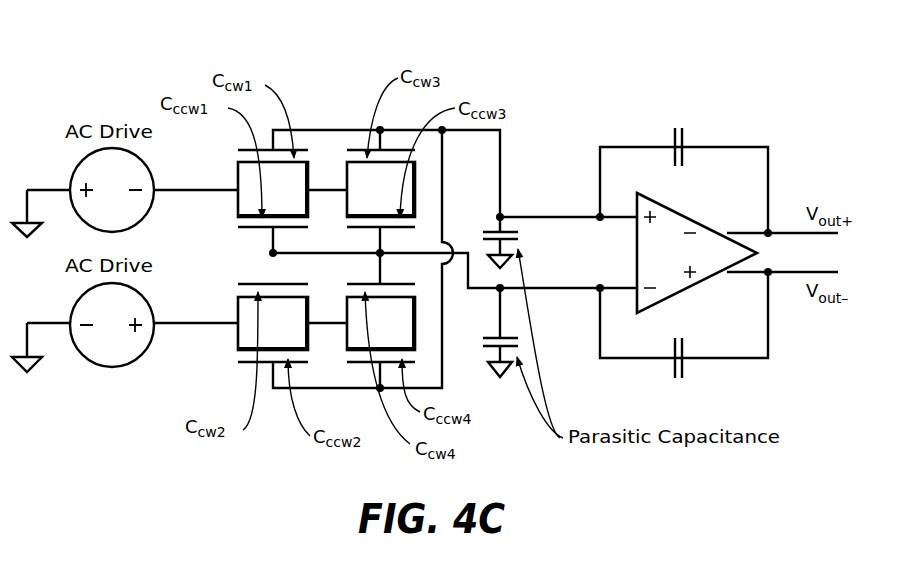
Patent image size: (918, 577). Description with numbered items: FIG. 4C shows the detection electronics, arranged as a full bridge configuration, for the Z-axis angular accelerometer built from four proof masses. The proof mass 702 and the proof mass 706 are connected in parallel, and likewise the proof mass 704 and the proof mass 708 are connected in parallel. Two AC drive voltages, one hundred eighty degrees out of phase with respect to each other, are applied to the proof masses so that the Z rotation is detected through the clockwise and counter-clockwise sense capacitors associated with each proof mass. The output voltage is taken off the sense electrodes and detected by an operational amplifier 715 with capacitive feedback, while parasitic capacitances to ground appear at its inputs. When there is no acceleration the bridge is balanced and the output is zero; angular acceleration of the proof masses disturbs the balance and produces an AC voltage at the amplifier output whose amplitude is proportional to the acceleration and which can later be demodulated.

The proof mass 702 is at (236, 170).
The proof mass 704 is at (236, 339).
The proof mass 706 is at (345, 177).
The proof mass 708 is at (418, 326).
The operational amplifier 715 is at (679, 212).